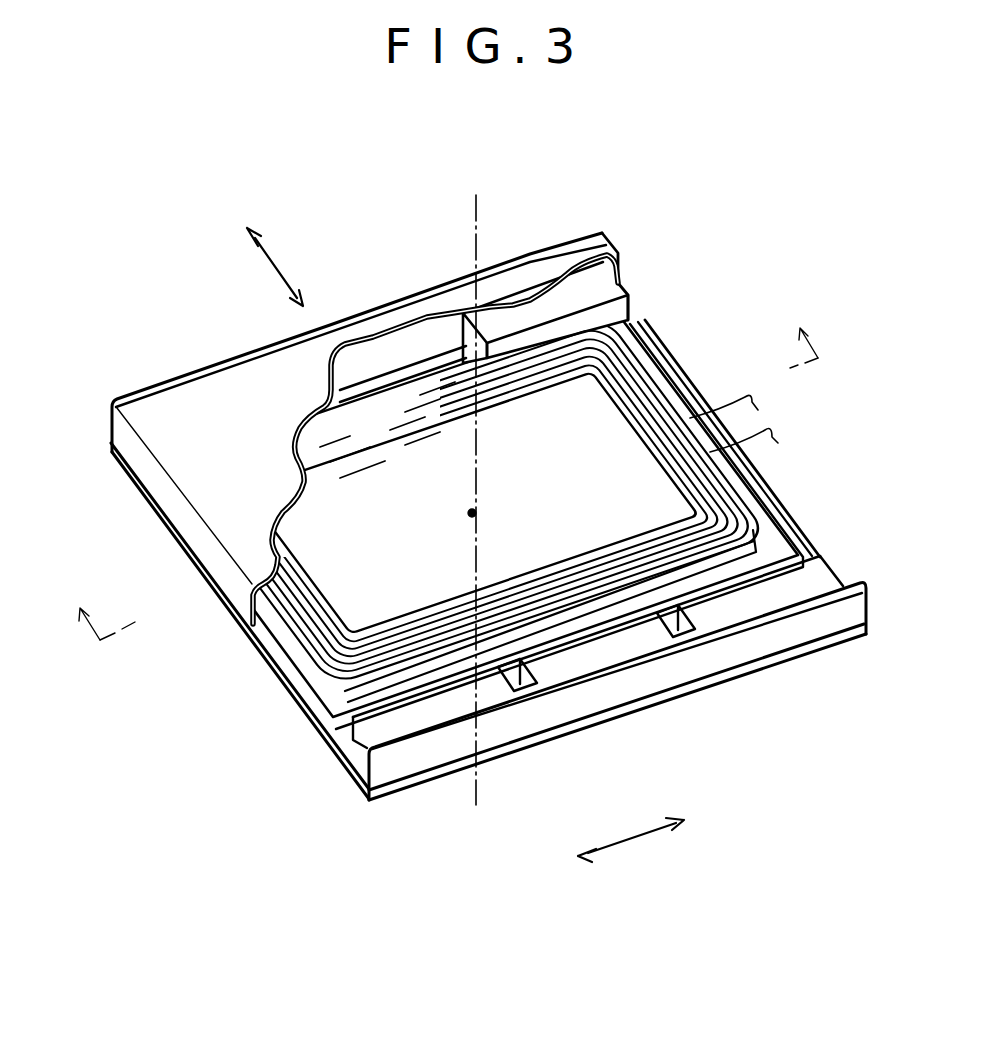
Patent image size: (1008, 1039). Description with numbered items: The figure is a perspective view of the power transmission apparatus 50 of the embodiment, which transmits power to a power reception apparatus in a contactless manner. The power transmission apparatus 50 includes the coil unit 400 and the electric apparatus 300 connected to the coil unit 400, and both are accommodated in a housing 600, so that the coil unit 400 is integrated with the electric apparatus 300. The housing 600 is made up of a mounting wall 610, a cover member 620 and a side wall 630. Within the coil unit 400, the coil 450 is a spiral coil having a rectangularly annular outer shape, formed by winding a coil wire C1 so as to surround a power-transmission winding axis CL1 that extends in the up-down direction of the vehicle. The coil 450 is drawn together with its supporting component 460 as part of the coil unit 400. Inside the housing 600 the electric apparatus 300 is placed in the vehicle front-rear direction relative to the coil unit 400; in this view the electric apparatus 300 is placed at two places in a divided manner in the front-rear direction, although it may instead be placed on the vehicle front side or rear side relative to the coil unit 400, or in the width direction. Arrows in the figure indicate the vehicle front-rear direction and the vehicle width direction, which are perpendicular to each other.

The power transmission apparatus 50 is at (458, 534).
The electric apparatus 300 is at (600, 292).
The coil unit 400 is at (485, 565).
The coil 450 is at (610, 600).
The coil substrate 460 is at (553, 620).
The housing 600 is at (190, 455).
The mounting wall 610 is at (544, 740).
The cover member 620 is at (400, 318).
The side wall 630 is at (256, 355).
The coil wire C1 is at (740, 398).
The power-transmission winding axis CL1 is at (524, 217).